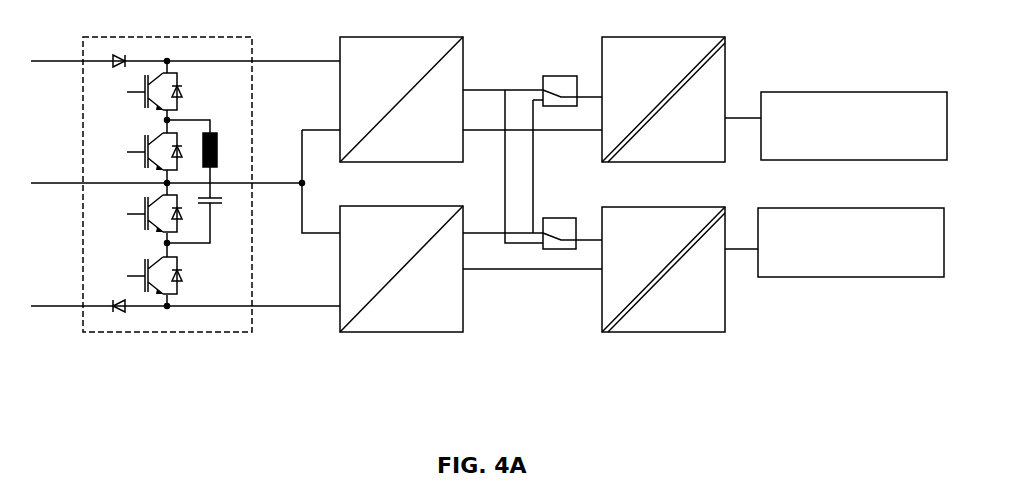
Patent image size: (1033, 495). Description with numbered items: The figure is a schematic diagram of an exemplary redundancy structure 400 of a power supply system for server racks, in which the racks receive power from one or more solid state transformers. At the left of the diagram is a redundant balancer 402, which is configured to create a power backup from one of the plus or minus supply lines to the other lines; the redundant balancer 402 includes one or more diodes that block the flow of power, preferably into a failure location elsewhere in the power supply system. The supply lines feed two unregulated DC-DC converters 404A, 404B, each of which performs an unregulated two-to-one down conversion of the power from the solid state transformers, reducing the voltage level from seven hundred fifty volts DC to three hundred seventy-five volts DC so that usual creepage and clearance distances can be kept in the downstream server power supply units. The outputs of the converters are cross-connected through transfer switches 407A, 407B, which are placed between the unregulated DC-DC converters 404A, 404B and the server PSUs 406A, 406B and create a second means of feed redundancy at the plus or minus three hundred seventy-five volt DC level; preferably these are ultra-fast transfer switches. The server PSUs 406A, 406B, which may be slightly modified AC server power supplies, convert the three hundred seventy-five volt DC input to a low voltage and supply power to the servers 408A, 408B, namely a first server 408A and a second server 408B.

The redundancy structure 400 is at (137, 404).
The redundant balancer 402 is at (110, 332).
The unregulated DC-DC converter 404A is at (385, 37).
The unregulated DC-DC converter 404B is at (403, 332).
The server power supply unit 406A is at (643, 37).
The server power supply unit 406B is at (657, 332).
The transfer switch 407A is at (563, 76).
The transfer switch 407B is at (558, 218).
The server 408A is at (926, 151).
The server 408B is at (923, 266).